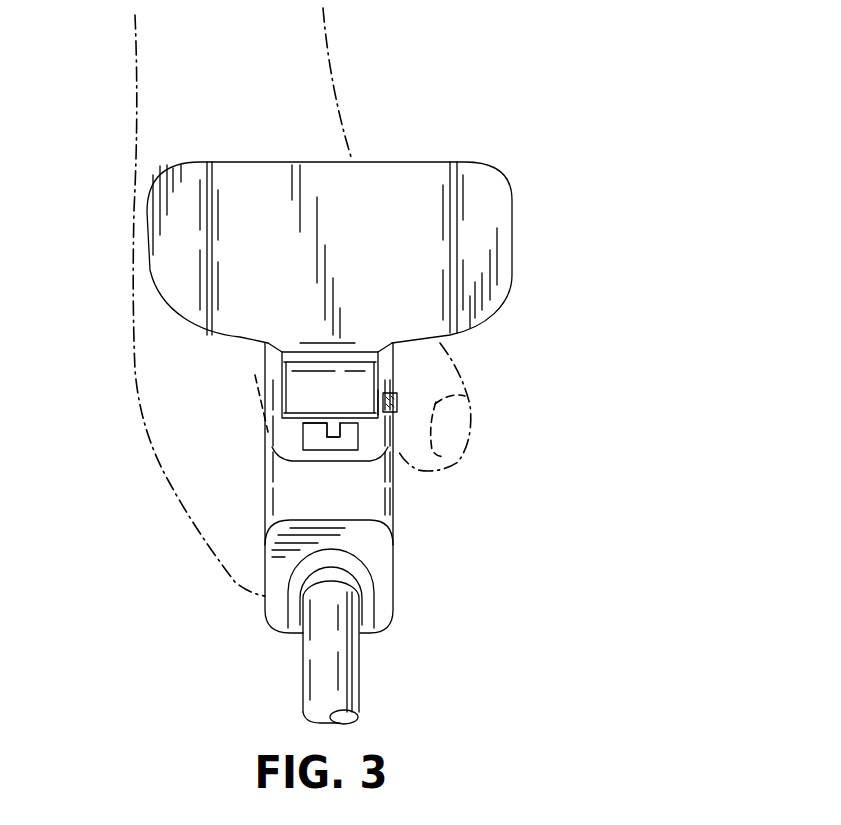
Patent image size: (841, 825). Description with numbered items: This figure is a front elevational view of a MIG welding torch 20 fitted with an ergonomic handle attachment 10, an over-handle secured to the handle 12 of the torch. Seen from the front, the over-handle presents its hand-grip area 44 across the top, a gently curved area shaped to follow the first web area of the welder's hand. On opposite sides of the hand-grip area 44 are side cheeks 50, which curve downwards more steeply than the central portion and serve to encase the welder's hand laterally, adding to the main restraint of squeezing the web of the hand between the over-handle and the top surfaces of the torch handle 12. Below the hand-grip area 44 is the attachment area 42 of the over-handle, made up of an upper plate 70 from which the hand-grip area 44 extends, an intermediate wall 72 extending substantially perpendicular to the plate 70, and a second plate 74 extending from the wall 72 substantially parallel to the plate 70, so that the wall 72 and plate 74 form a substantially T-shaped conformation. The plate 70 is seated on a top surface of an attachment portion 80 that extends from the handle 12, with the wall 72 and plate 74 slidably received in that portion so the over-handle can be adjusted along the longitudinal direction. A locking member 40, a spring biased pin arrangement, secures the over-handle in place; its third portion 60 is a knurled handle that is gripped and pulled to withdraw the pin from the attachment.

The ergonomic handle attachment 10 is at (513, 255).
The handle 12 is at (399, 518).
The MIG welding torch 20 is at (422, 626).
The locking member 40 is at (404, 399).
The attachment area 42 is at (293, 396).
The hand-grip area 44 is at (388, 183).
The side cheeks 50 is at (175, 223).
The third portion 60 is at (400, 408).
The upper plate 70 is at (305, 427).
The intermediate wall 72 is at (296, 422).
The second plate 74 is at (323, 447).
The attachment portion 80 is at (372, 445).